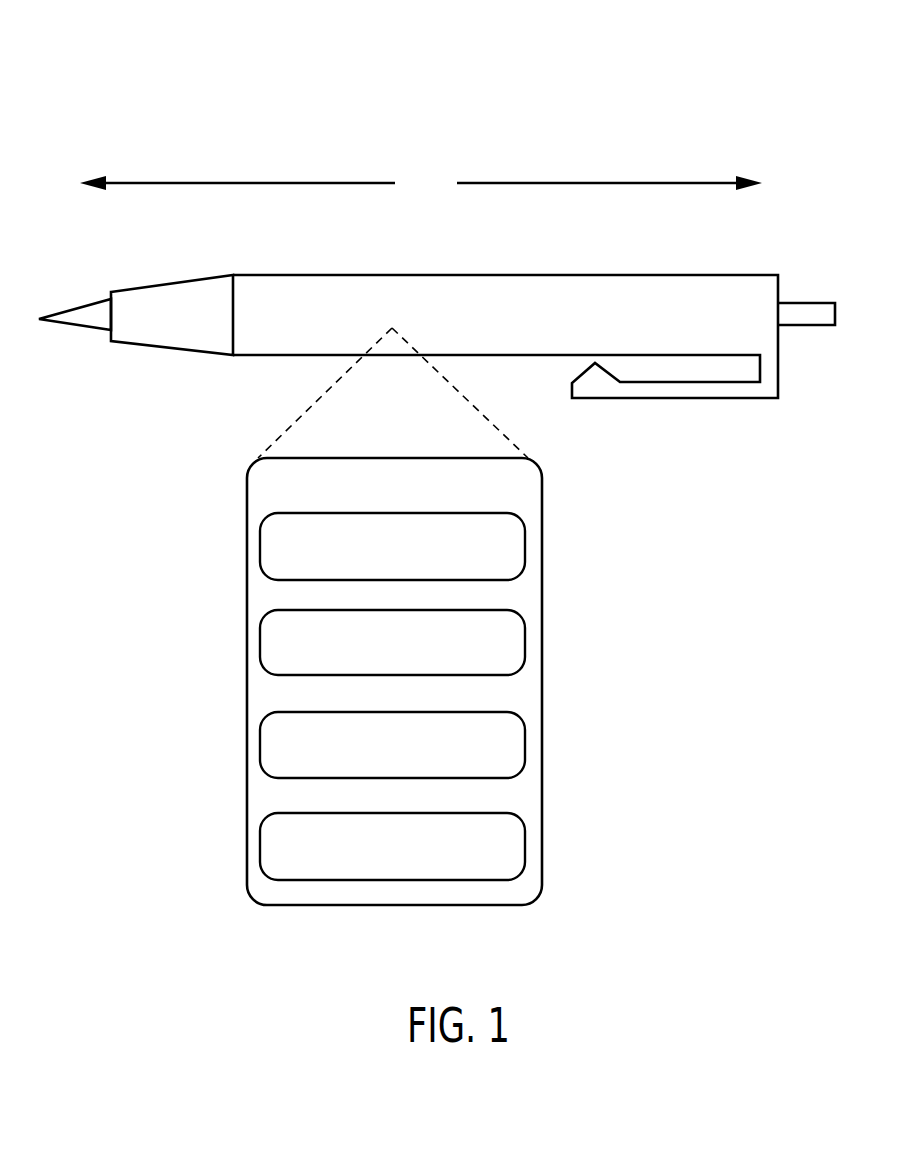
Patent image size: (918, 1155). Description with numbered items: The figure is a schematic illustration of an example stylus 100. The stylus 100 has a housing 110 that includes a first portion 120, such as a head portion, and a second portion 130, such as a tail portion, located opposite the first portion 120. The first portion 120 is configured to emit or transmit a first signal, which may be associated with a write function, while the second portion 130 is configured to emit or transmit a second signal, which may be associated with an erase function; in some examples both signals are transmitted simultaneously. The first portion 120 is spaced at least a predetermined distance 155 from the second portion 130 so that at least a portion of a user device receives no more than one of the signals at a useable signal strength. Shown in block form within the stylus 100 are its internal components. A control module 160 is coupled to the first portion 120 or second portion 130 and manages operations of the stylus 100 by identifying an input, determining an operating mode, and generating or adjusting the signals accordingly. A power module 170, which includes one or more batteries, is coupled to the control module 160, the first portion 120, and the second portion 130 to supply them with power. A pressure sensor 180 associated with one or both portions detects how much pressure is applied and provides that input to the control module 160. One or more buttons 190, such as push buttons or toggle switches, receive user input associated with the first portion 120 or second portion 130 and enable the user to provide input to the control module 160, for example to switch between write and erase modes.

The stylus 100 is at (465, 496).
The housing 110 is at (236, 86).
The first portion 120 is at (75, 338).
The second portion 130 is at (762, 263).
The predetermined distance 155 is at (421, 184).
The control module 160 is at (500, 557).
The power module 170 is at (495, 654).
The pressure sensor 180 is at (508, 756).
The buttons 190 is at (452, 857).